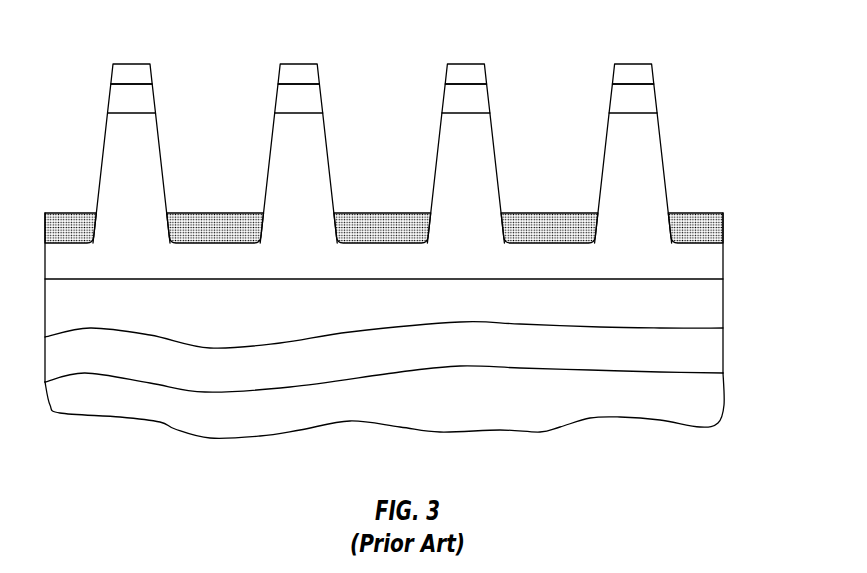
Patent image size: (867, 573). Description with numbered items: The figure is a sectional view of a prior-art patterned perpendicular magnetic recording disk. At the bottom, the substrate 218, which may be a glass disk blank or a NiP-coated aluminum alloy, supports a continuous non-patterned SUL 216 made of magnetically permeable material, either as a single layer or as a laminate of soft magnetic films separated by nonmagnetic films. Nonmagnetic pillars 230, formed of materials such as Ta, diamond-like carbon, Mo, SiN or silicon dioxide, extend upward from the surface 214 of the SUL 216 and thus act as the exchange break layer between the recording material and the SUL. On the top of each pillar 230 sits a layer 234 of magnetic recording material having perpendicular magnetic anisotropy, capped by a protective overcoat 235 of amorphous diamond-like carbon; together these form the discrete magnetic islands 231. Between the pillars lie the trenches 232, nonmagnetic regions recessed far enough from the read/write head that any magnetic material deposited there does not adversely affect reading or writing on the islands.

The surface of SUL 214 is at (330, 278).
The SUL 216 is at (707, 313).
The substrate 218 is at (653, 408).
The pillars 230 is at (142, 178).
The magnetic islands 231 is at (124, 52).
The trenches 232 is at (80, 212).
The recording layer 234 is at (142, 105).
The protective overcoat 235 is at (142, 73).